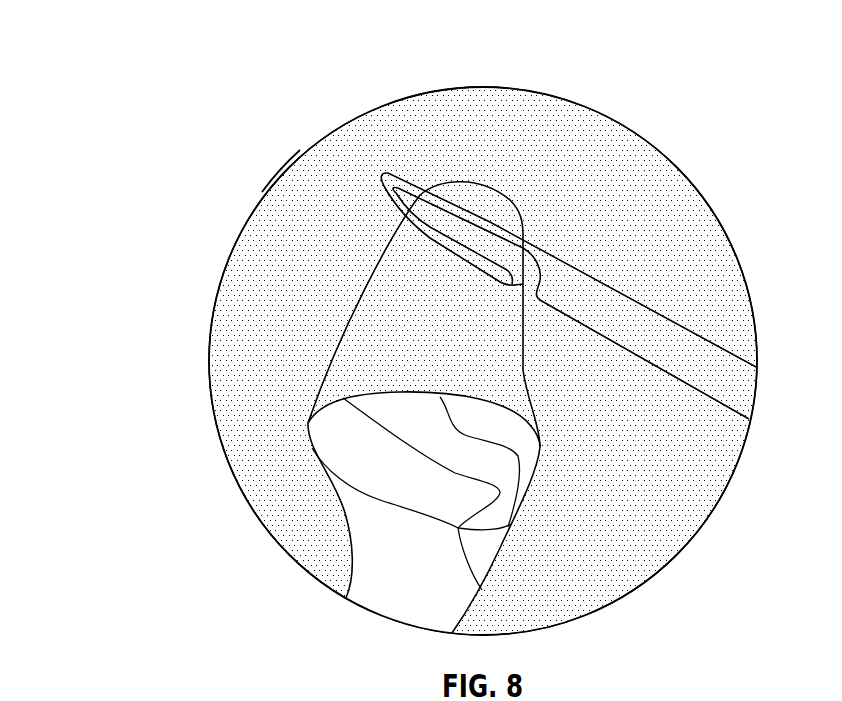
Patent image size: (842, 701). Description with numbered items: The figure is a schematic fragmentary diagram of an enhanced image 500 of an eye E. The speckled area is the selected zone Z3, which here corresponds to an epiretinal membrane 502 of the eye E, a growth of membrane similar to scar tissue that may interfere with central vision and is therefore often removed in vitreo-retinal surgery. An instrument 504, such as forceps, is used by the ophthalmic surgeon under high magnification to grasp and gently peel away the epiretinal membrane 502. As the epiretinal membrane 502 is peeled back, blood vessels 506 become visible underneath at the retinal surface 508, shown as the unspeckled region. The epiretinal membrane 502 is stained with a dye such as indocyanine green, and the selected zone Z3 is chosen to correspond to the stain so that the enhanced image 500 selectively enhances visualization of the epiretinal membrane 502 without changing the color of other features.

The enhanced image 500 is at (123, 40).
The eye E is at (667, 140).
The selected zone Z3 is at (262, 192).
The epiretinal membrane 502 is at (263, 327).
The instrument 504 is at (701, 406).
The blood vessels 506 is at (383, 509).
The retinal surface 508 is at (432, 592).